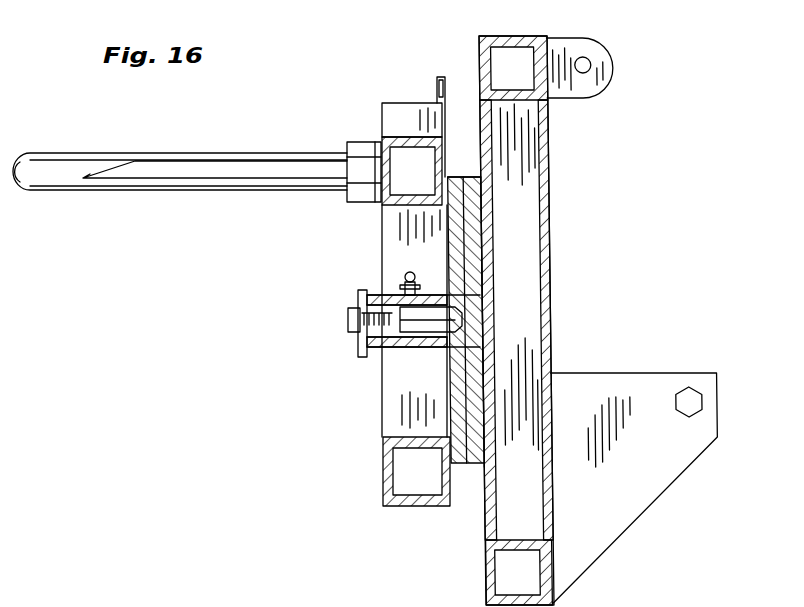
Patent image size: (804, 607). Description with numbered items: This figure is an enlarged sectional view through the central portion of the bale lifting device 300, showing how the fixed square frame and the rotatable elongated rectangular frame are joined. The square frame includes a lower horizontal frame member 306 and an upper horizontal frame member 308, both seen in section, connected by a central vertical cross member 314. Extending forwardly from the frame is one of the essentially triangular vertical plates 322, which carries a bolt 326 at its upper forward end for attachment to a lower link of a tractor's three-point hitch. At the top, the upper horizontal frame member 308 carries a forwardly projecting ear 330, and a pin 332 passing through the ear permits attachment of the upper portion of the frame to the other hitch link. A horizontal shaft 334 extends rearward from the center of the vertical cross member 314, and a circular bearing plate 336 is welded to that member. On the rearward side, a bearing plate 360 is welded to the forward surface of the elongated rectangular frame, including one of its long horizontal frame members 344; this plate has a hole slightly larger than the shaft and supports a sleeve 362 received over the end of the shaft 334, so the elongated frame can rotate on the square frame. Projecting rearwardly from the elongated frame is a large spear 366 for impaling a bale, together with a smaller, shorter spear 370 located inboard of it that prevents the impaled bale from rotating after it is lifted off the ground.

The bale lifting device 300 is at (294, 235).
The lower horizontal frame member 306 is at (505, 575).
The upper horizontal frame member 308 is at (493, 68).
The central vertical cross member 314 is at (527, 303).
The vertical plate 322 is at (660, 477).
The bolt 326 is at (692, 388).
The ear 330 is at (583, 43).
The pin 332 is at (590, 64).
The horizontal shaft 334 is at (430, 326).
The circular bearing plate 336 is at (476, 195).
The long horizontal frame member 344 is at (387, 480).
The bearing plate 360 is at (462, 468).
The sleeve 362 is at (368, 290).
The large spear 366 is at (58, 154).
The smaller spear 370 is at (200, 186).